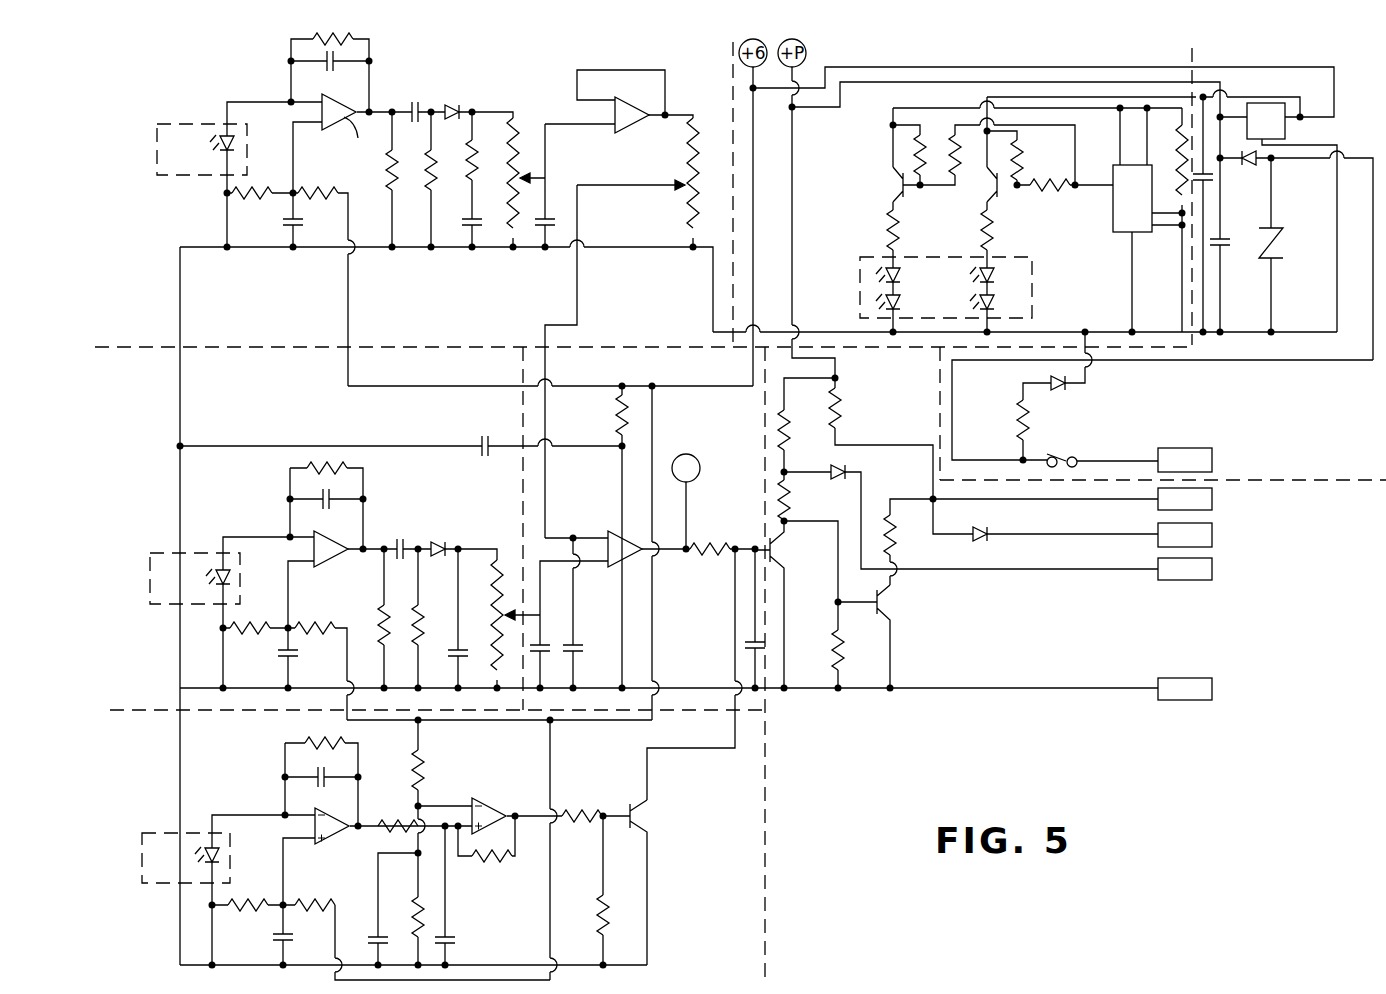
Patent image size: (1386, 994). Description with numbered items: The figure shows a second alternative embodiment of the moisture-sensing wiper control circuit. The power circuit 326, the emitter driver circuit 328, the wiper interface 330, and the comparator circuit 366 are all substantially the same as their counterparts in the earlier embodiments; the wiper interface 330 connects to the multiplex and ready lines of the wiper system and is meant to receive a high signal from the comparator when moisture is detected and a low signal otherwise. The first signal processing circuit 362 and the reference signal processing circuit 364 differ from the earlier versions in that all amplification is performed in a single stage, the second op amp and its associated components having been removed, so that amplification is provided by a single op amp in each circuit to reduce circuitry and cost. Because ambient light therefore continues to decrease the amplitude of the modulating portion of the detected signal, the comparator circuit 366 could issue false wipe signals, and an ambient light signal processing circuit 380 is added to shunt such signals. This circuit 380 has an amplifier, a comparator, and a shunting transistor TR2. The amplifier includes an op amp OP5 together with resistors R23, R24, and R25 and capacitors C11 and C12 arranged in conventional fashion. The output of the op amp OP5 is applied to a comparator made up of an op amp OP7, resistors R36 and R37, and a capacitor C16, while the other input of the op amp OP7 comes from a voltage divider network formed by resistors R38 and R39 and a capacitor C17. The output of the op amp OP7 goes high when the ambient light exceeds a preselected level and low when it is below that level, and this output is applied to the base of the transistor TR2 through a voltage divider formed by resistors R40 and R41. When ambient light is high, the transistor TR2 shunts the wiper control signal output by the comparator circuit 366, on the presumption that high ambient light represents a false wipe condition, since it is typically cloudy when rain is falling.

The first signal processing circuit 362 is at (255, 425).
The reference signal processing circuit 364 is at (492, 82).
The comparator circuit 366 is at (632, 377).
The emitter driver circuit 328 is at (1062, 67).
The power circuit 326 is at (1265, 410).
The wiper interface 330 is at (1057, 632).
The ambient light signal processing circuit 380 is at (258, 778).
The resistor R23 is at (333, 726).
The capacitor C11 is at (323, 757).
The op amp OP5 is at (343, 829).
The resistor R24 is at (235, 889).
The resistor R25 is at (306, 905).
The capacitor C12 is at (288, 930).
The resistor R37 is at (392, 824).
The resistor R38 is at (428, 760).
The resistor R39 is at (417, 921).
The capacitor C17 is at (374, 939).
The capacitor C16 is at (448, 942).
The op amp OP7 is at (498, 812).
The resistor R36 is at (505, 858).
The resistor R40 is at (586, 819).
The resistor R41 is at (600, 894).
The transistor TR2 is at (636, 805).